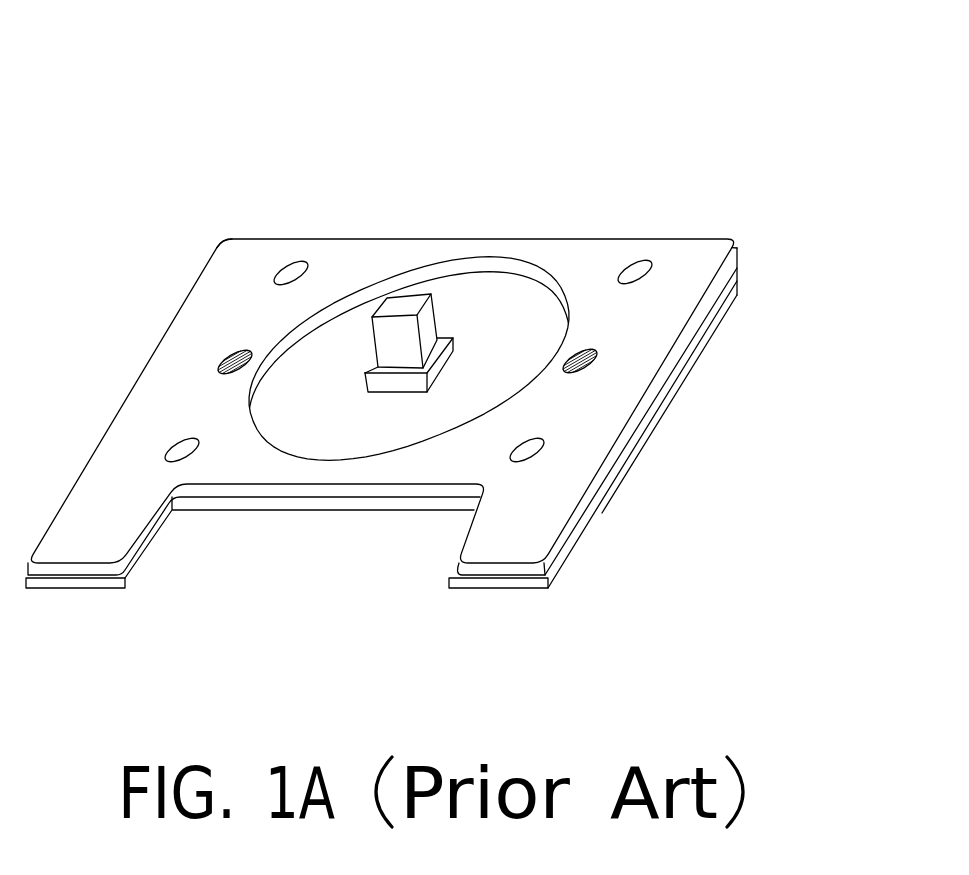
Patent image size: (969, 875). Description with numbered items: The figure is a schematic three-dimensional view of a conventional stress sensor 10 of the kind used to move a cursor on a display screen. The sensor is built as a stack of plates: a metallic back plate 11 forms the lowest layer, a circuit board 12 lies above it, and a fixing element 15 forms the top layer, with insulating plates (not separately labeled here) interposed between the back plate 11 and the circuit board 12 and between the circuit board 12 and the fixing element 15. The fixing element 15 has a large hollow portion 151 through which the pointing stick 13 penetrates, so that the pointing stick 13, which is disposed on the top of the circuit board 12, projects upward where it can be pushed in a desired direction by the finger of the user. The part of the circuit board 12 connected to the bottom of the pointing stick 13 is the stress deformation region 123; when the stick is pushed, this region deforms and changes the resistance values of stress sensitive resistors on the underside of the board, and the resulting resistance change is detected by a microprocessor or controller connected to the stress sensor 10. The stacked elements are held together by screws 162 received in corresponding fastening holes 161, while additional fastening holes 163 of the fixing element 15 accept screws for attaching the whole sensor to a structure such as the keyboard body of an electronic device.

The stress sensor 10 is at (500, 40).
The metallic back plate 11 is at (717, 323).
The circuit board 12 is at (737, 275).
The stress deformation region 123 is at (522, 332).
The pointing stick 13 is at (405, 303).
The fixing element 15 is at (683, 247).
The hollow portion 151 is at (533, 259).
The fastening holes 161 is at (222, 239).
The screws 162 is at (293, 268).
The fastening holes 163 is at (230, 352).